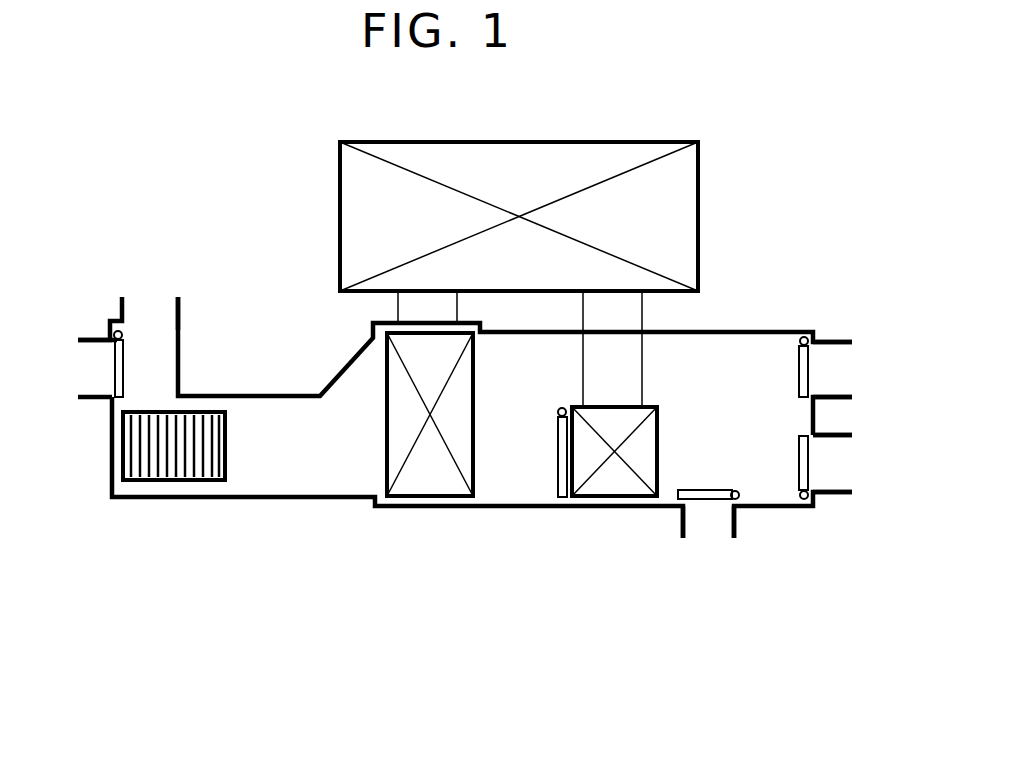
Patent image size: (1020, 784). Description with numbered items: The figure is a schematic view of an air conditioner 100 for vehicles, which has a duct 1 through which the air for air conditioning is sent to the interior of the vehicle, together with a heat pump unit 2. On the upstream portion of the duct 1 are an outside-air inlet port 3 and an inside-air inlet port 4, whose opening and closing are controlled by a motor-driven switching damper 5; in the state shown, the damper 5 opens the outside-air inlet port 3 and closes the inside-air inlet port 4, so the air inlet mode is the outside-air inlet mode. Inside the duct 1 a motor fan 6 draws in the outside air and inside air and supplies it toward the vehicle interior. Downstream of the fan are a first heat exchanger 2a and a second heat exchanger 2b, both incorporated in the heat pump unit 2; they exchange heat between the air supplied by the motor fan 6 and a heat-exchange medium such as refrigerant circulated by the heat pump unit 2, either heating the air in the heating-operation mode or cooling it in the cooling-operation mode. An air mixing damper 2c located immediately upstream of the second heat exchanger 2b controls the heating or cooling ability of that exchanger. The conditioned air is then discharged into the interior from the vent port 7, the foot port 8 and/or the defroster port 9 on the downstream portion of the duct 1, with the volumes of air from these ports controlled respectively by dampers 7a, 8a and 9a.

The air conditioner 100 is at (287, 207).
The duct 1 is at (310, 497).
The heat pump unit 2 is at (652, 140).
The first heat exchanger 2a is at (428, 497).
The second heat exchanger 2b is at (608, 498).
The air mixing damper 2c is at (563, 500).
The outside-air inlet port 3 is at (148, 308).
The inside-air inlet port 4 is at (83, 360).
The switching damper 5 is at (110, 365).
The motor fan 6 is at (177, 480).
The vent port 7 is at (843, 367).
The damper 7a is at (813, 360).
The foot port 8 is at (840, 458).
The damper 8a is at (813, 468).
The defroster port 9 is at (722, 523).
The damper 9a is at (695, 500).